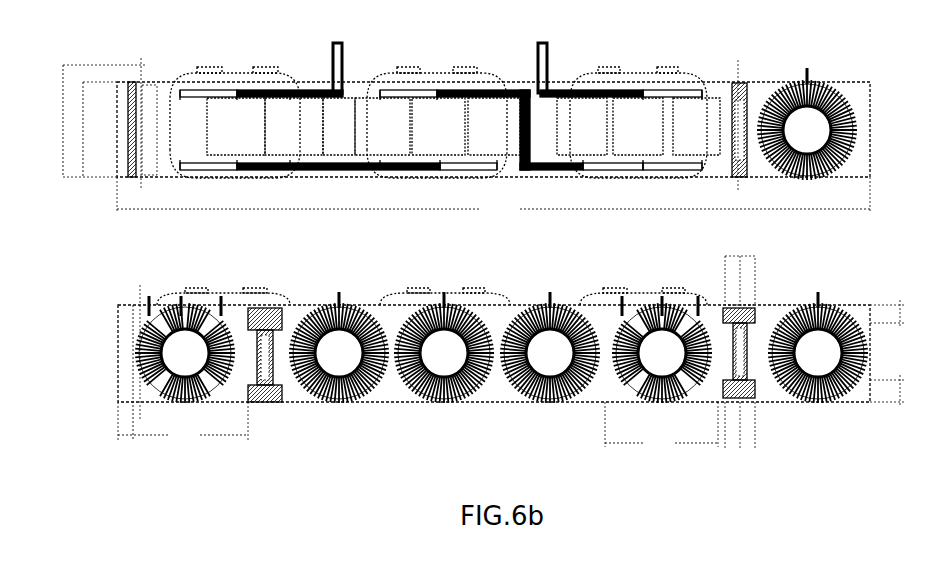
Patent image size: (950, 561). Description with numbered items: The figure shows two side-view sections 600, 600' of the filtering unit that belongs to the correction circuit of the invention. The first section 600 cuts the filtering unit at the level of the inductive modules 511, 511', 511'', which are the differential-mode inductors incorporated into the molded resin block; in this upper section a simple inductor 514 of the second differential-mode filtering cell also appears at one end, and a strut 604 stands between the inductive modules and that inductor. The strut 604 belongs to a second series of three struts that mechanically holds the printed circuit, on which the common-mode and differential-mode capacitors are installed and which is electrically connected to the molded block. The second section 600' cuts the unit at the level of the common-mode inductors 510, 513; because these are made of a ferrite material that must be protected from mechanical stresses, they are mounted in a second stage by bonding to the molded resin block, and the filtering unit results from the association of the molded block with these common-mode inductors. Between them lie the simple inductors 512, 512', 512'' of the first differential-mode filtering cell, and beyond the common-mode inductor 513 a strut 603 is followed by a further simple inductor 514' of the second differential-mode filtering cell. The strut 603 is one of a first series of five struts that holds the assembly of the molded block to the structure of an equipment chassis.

The first section 600 is at (440, 136).
The second section 600' is at (480, 366).
The inductive module 511 is at (305, 148).
The inductive module 511' is at (475, 160).
The inductive module 511'' is at (622, 147).
The strut 604 is at (740, 86).
The simple inductor 514 is at (817, 113).
The common-mode inductor 510 is at (197, 402).
The simple inductor 512 is at (344, 383).
The simple inductor 512' is at (455, 383).
The simple inductor 512'' is at (561, 386).
The common-mode inductor 513 is at (670, 399).
The strut 603 is at (745, 313).
The simple inductor 514' is at (829, 337).